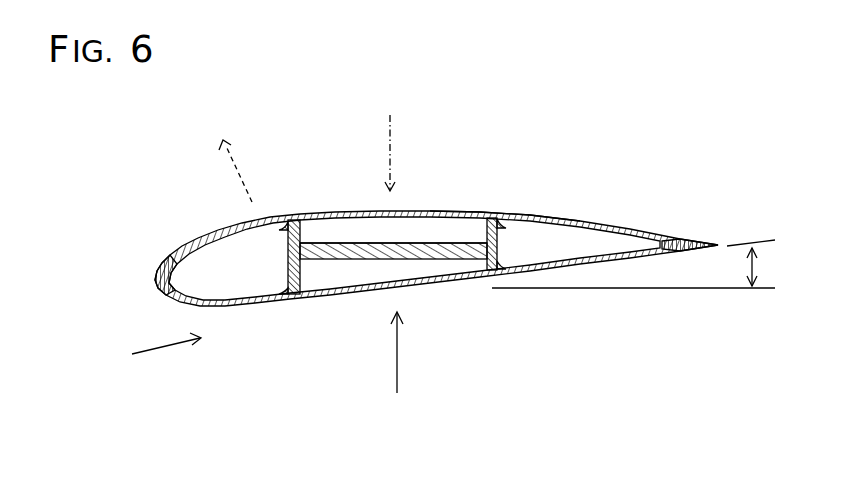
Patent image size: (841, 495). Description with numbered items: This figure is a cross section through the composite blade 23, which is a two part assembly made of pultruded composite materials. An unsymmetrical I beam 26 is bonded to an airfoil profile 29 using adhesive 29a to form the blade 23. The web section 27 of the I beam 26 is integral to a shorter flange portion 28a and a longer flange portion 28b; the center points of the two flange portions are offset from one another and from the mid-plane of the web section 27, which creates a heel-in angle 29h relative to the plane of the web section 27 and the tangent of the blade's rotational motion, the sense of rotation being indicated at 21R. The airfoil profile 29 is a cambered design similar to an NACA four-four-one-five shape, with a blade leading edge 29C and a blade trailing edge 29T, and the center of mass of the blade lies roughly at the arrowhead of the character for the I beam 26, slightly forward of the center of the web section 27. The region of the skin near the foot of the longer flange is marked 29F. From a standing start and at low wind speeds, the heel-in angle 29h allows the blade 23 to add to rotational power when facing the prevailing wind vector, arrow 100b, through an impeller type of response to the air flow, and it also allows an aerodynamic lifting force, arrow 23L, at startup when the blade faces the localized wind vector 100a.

The blade 23 is at (111, 138).
The aerodynamic lifting force 23L is at (222, 151).
The rotational direction 21R is at (391, 137).
The unsymmetrical I beam 26 is at (364, 242).
The web section 27 is at (438, 244).
The adhesive 29a is at (503, 219).
The shorter flange portion 28a is at (501, 243).
The blade trailing edge 29T is at (658, 231).
The blade leading edge 29C is at (148, 280).
The longer flange portion 28b is at (287, 259).
The heel-in angle 29h is at (633, 264).
The lower skin flange 29F is at (295, 299).
The airfoil profile 29 is at (455, 279).
The localized wind vector 100a is at (132, 352).
The prevailing wind vector 100b is at (400, 371).